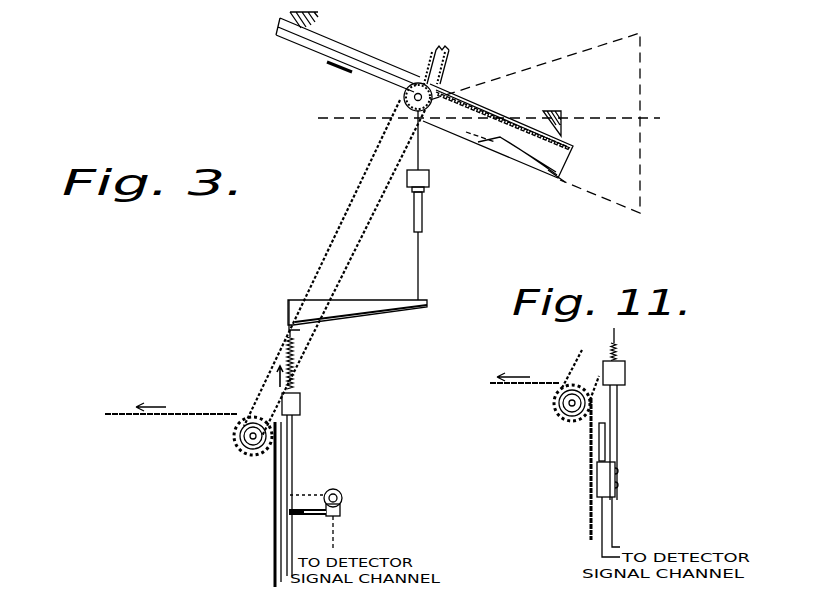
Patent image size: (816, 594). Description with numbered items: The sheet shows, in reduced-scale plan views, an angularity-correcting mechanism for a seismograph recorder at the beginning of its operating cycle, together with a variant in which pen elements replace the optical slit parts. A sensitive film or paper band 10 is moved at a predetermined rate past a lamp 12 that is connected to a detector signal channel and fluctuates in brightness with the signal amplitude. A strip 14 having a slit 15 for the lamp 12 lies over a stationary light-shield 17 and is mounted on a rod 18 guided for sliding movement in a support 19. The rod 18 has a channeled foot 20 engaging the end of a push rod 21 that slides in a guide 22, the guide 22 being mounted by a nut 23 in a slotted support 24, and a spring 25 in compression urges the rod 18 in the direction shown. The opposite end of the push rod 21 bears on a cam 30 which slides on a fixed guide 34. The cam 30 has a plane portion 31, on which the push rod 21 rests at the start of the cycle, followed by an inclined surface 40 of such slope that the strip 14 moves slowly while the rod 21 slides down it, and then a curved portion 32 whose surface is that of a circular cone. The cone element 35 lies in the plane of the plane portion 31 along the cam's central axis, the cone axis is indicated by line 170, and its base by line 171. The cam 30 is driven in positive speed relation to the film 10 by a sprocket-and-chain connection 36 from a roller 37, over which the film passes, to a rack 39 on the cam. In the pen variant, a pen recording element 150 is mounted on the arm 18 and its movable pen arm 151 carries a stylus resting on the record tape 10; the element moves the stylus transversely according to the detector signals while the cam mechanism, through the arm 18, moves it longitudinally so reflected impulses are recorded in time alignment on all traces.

In FIG. 3, the film or paper band 10 is at (273, 552).
In FIG. 11, the film or paper band 10 is at (589, 488).
In FIG. 3, the lamp 12 is at (348, 484).
In FIG. 3, the strip 14 is at (293, 448).
In FIG. 3, the slit 15 is at (290, 494).
In FIG. 3, the stationary light-shield 17 is at (292, 550).
In FIG. 3, the rod 18 is at (295, 411).
In FIG. 11, the rod 18 is at (619, 403).
In FIG. 3, the support 19 is at (300, 398).
In FIG. 11, the support 19 is at (626, 366).
In FIG. 3, the channeled foot 20 is at (375, 312).
In FIG. 3, the push rod 21 is at (420, 252).
In FIG. 3, the guide 22 is at (423, 218).
In FIG. 3, the nut 23 is at (425, 193).
In FIG. 3, the slotted support 24 is at (430, 182).
In FIG. 3, the spring 25 is at (296, 358).
In FIG. 3, the cam 30 is at (511, 142).
In FIG. 3, the plane portion 31 is at (404, 108).
In FIG. 3, the curved portion 32 is at (500, 150).
In FIG. 3, the fixed guide 34 is at (292, 40).
In FIG. 3, the cone element 35 is at (596, 190).
In FIG. 3, the sprocket-and-chain connection 36 is at (358, 242).
In FIG. 3, the roller 37 is at (250, 457).
In FIG. 11, the roller 37 is at (553, 408).
In FIG. 3, the rack 39 is at (480, 118).
In FIG. 3, the inclined surface 40 is at (487, 142).
In FIG. 11, the pen recording element 150 is at (616, 487).
In FIG. 11, the movable pen arm 151 is at (598, 437).
In FIG. 3, the cone axis line 170 is at (360, 118).
In FIG. 3, the cone base line 171 is at (641, 40).